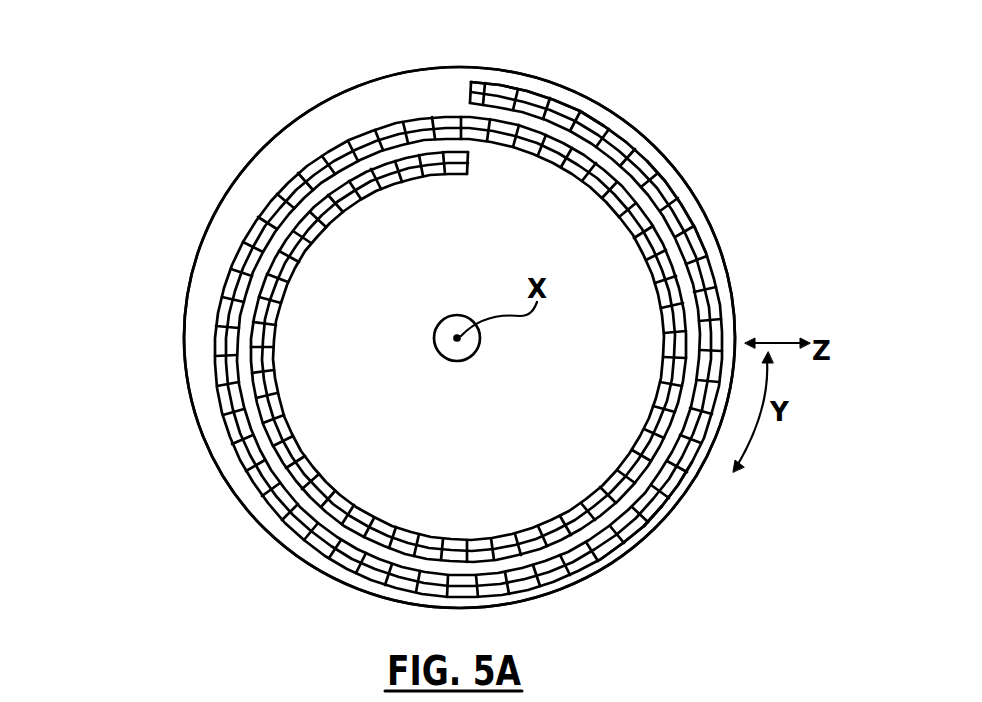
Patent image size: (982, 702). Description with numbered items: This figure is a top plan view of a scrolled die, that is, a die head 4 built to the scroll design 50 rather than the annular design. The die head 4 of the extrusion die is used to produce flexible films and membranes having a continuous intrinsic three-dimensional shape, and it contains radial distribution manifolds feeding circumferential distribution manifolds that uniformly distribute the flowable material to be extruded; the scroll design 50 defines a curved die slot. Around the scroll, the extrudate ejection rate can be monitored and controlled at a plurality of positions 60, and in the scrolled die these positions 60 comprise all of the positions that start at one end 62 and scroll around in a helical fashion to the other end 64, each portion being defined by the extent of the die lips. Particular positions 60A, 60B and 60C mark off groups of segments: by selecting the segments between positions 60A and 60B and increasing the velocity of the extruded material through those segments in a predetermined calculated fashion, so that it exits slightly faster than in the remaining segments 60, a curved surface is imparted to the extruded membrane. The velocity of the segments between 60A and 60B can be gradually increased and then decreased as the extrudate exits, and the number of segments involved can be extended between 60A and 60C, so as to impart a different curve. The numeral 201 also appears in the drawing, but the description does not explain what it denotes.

The die head 4 is at (272, 157).
The scroll design 50 is at (734, 320).
The positions 60 is at (680, 165).
The position 60A is at (560, 86).
The position 60B is at (703, 226).
The position 60C is at (642, 527).
The one end 62 is at (471, 82).
The other end 64 is at (468, 164).
The coil element 201 is at (675, 482).